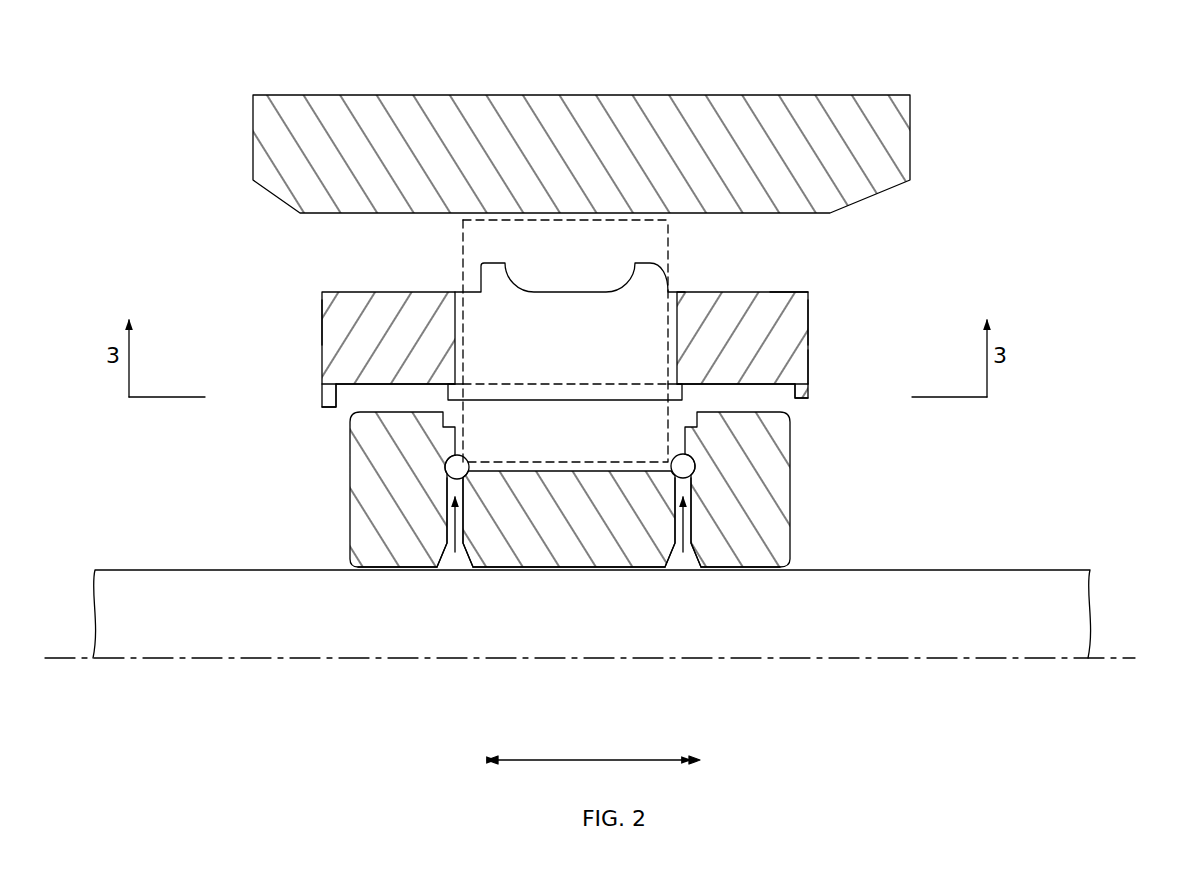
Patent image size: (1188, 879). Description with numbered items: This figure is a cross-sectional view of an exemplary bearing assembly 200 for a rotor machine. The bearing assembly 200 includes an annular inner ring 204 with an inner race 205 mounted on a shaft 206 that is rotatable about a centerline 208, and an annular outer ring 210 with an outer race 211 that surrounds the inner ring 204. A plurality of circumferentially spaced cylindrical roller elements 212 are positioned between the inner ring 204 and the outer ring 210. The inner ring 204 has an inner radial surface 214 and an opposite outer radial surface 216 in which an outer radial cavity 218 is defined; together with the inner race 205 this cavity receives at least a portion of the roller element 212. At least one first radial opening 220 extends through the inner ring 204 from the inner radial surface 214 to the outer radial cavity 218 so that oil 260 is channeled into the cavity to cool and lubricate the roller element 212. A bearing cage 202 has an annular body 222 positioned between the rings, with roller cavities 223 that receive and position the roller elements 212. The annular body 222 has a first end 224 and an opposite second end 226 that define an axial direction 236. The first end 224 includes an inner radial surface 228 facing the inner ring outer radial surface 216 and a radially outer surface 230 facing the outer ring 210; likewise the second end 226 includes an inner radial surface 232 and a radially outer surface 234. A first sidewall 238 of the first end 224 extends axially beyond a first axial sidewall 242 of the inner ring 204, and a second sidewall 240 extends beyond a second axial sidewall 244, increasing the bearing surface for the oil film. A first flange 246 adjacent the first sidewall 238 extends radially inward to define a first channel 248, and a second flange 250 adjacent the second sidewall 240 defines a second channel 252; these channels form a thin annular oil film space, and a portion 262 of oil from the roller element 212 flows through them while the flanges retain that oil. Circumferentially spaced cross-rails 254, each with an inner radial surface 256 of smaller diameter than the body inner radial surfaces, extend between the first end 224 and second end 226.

The bearing assembly 200 is at (892, 73).
The bearing cage 202 is at (590, 290).
The annular inner ring 204 is at (790, 500).
The inner race 205 is at (533, 570).
The shaft 206 is at (990, 569).
The centerline 208 is at (1125, 656).
The annular outer ring 210 is at (583, 93).
The outer race 211 is at (543, 216).
The cylindrical roller elements 212 is at (668, 243).
The inner radial surface 214 is at (570, 572).
The outer radial surface 216 is at (808, 366).
The outer radial cavity 218 is at (550, 434).
The first radial opening 220 is at (428, 570).
The annular body 222 is at (808, 294).
The roller cavities 223 is at (500, 320).
The first end 224 is at (307, 282).
The second end 226 is at (828, 272).
The inner radial surface 228 is at (322, 356).
The radially outer surface 230 is at (355, 290).
The inner radial surface 232 is at (763, 383).
The radially outer surface 234 is at (779, 290).
The axial direction 236 is at (598, 755).
The first sidewall 238 is at (322, 321).
The second sidewall 240 is at (808, 322).
The first axial sidewall 242 is at (350, 502).
The second axial sidewall 244 is at (790, 543).
The first flange 246 is at (322, 396).
The first channel 248 is at (356, 403).
The second flange 250 is at (808, 392).
The second channel 252 is at (785, 403).
The cross-rails 254 is at (594, 383).
The inner radial surface 256 is at (512, 398).
The oil 260 is at (455, 556).
The portion of oil 262 is at (418, 400).